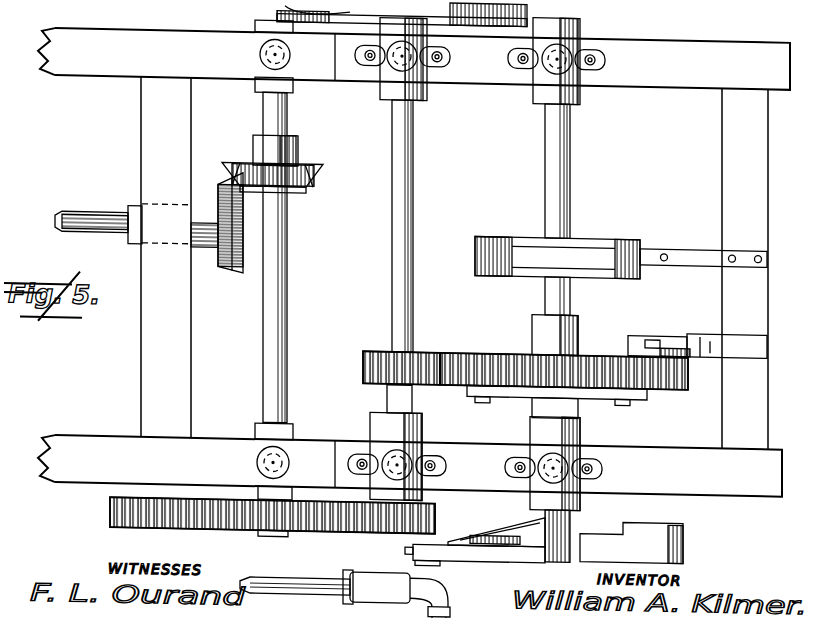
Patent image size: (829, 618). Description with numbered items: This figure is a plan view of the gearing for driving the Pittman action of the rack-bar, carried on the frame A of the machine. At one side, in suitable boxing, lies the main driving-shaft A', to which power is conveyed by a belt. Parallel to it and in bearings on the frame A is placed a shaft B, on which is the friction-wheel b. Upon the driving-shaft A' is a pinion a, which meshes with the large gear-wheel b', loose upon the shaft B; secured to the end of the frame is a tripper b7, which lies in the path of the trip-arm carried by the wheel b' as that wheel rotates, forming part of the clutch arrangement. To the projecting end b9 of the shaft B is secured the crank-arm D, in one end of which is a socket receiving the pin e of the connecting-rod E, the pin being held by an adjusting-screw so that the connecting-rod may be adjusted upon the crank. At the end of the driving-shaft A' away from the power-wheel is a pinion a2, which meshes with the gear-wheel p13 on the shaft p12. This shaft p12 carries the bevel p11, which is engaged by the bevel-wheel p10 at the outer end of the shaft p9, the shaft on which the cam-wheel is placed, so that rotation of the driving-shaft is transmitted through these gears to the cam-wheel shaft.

The frame A is at (414, 46).
The main driving-shaft A' is at (402, 215).
The shaft B is at (530, 172).
The crank-arm D is at (544, 530).
The connecting-rod E is at (344, 574).
The pin e is at (448, 601).
The pinion a is at (401, 356).
The pinion a2 is at (405, 468).
The friction-wheel b is at (621, 249).
The large gear-wheel b' is at (564, 368).
The tripper b7 is at (697, 333).
The projecting end of shaft B b9 is at (496, 524).
The shaft p9 is at (123, 216).
The bevel-wheel p10 is at (217, 231).
The bevel p11 is at (281, 178).
The shaft p12 is at (286, 260).
The gear-wheel p13 is at (110, 504).